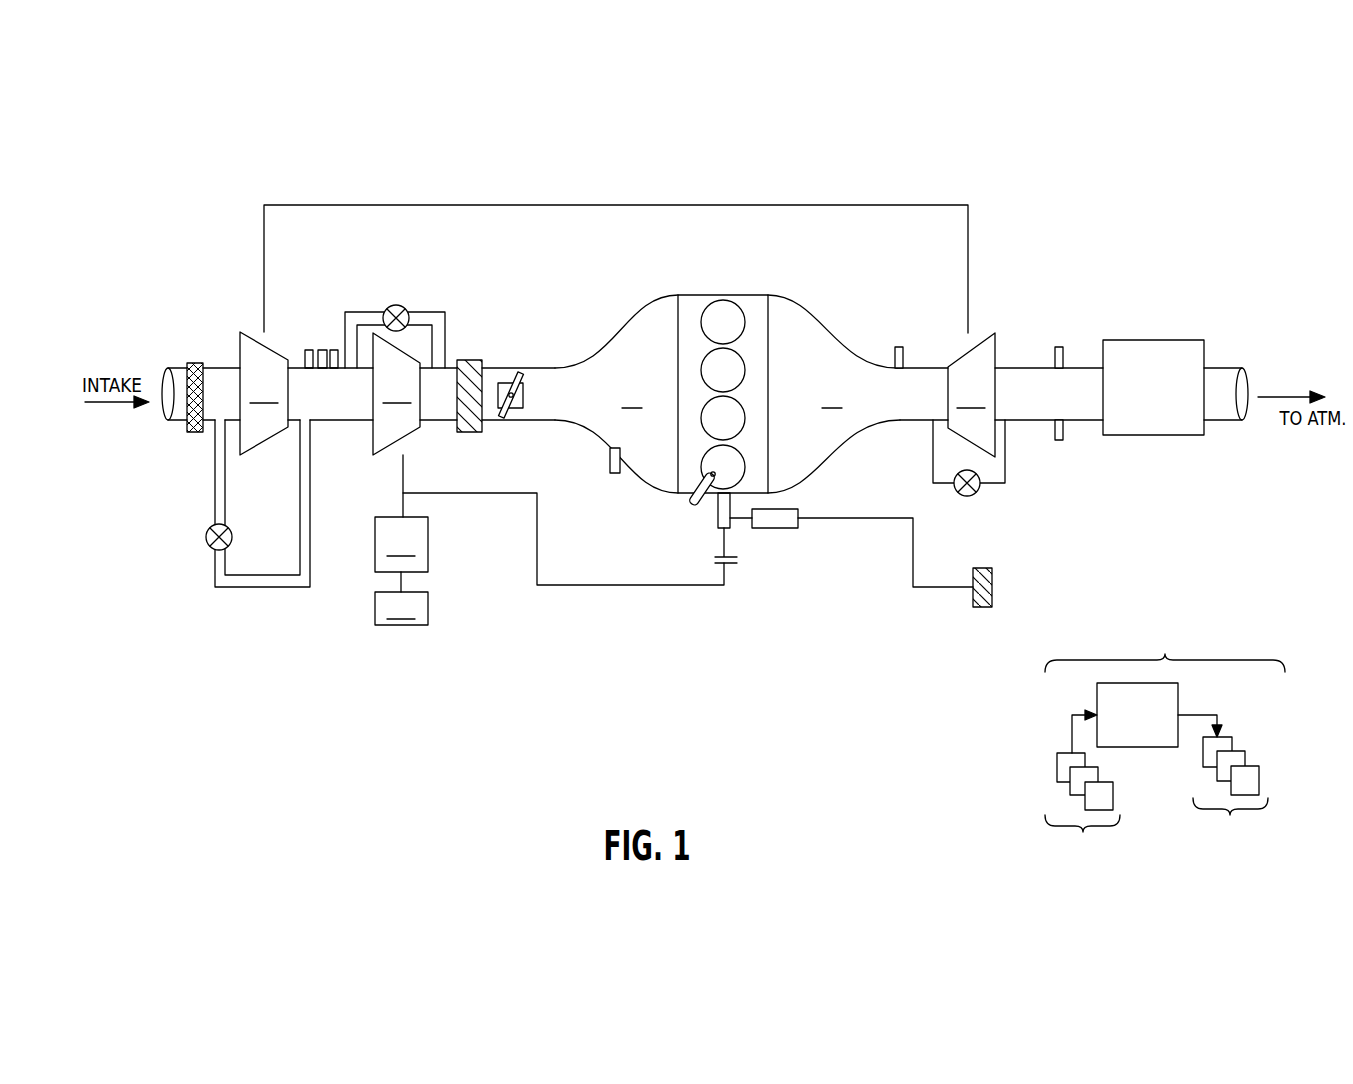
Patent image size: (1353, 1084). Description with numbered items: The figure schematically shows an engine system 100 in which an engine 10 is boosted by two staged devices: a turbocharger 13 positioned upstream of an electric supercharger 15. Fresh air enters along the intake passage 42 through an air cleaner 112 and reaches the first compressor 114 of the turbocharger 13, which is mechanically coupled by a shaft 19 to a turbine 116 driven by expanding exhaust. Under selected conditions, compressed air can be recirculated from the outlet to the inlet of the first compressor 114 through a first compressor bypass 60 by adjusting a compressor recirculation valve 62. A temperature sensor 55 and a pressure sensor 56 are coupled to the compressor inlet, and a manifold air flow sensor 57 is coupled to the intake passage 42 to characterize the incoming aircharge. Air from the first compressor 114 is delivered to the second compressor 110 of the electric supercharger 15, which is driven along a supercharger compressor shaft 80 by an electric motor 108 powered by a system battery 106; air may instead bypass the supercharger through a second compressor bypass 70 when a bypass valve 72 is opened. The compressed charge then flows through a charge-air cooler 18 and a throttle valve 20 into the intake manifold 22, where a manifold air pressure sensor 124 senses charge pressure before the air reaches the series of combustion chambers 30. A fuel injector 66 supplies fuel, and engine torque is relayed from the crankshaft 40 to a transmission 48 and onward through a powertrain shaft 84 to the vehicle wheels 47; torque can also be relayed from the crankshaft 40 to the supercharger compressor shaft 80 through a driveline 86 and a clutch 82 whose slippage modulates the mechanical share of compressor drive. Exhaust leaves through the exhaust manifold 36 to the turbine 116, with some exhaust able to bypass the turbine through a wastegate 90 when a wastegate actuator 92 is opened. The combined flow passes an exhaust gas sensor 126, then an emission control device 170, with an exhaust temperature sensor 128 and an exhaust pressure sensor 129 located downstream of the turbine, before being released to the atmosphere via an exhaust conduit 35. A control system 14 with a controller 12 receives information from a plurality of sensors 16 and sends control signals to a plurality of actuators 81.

The engine system 100 is at (1234, 147).
The turbocharger 13 is at (544, 180).
The shaft 19 is at (754, 205).
The air cleaner 112 is at (195, 363).
The intake passage 42 is at (190, 426).
The first compressor 114 is at (264, 393).
The second compressor 110 is at (396, 394).
The first compressor bypass 60 is at (215, 496).
The compressor recirculation valve 62 is at (207, 530).
The temperature sensor 55 is at (308, 350).
The pressure sensor 56 is at (320, 350).
The manifold air flow sensor 57 is at (334, 350).
The second compressor bypass 70 is at (360, 312).
The bypass valve 72 is at (392, 305).
The supercharger compressor shaft 80 is at (405, 463).
The electric motor 108 is at (401, 544).
The system battery 106 is at (401, 598).
The electric supercharger 15 is at (455, 561).
The driveline 86 is at (615, 585).
The charge-air cooler 18 is at (471, 360).
The throttle valve 20 is at (521, 405).
The intake manifold 22 is at (616, 394).
The manifold air pressure sensor 124 is at (610, 456).
The engine 10 is at (768, 380).
The combustion chambers 30 is at (738, 309).
The exhaust manifold 36 is at (834, 394).
The fuel injector 66 is at (693, 504).
The crankshaft 40 is at (718, 521).
The clutch 82 is at (735, 565).
The transmission 48 is at (783, 528).
The powertrain shaft 84 is at (845, 520).
The vehicle wheels 47 is at (973, 575).
The exhaust gas sensor 126 is at (898, 347).
The turbine 116 is at (971, 395).
The wastegate 90 is at (933, 463).
The wastegate actuator 92 is at (965, 497).
The exhaust pressure sensor 129 is at (1059, 347).
The exhaust temperature sensor 128 is at (1058, 440).
The emission control device 170 is at (1140, 340).
The exhaust conduit 35 is at (1225, 368).
The control system 14 is at (1165, 740).
The controller 12 is at (1137, 715).
The sensors 16 is at (1082, 789).
The actuators 81 is at (1223, 784).